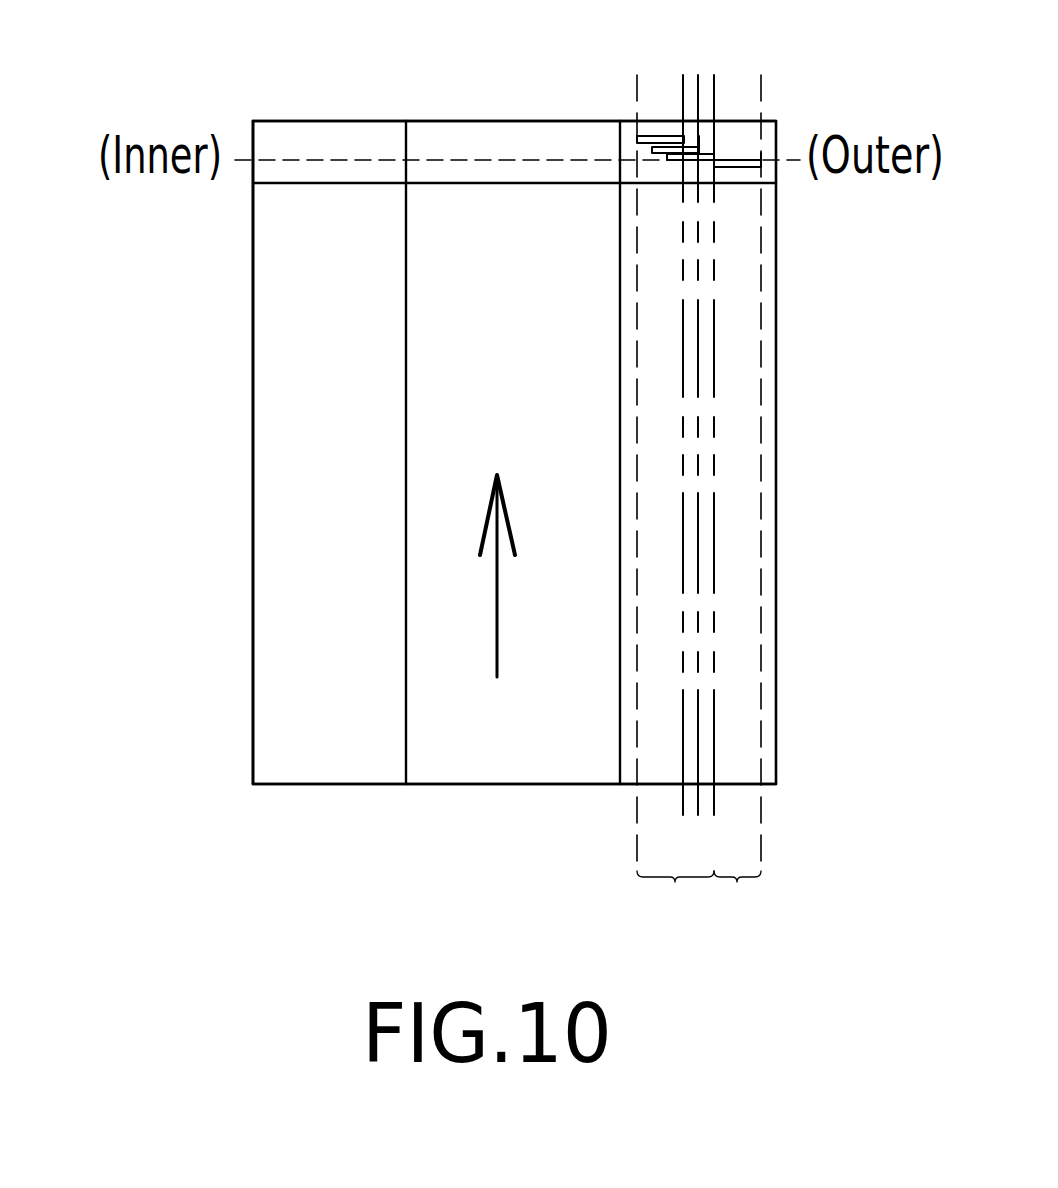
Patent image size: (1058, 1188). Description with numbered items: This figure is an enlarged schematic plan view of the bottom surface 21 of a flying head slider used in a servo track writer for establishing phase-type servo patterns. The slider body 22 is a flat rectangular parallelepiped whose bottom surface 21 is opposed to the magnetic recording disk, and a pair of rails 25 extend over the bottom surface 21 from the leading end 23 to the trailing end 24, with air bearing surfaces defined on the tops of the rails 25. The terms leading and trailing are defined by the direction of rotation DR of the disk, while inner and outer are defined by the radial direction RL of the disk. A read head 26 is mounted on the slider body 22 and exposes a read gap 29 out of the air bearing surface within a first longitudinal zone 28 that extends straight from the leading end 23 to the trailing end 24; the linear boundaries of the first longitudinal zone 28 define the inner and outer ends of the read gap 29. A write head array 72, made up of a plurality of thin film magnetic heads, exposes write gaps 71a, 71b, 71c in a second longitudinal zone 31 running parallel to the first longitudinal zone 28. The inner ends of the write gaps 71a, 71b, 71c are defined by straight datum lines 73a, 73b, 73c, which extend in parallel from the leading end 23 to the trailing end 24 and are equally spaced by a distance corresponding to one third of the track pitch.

The bottom surface 21 is at (297, 582).
The slider body 22 is at (252, 452).
The leading end 23 is at (283, 786).
The trailing end 24 is at (285, 120).
The rail 25 is at (407, 380).
The read head 26 is at (764, 153).
The first longitudinal zone 28 is at (741, 511).
The read gap 29 is at (731, 167).
The second longitudinal zone 31 is at (669, 511).
The write gap 71a is at (678, 156).
The write gap 71b is at (693, 138).
The write gap 71c is at (656, 137).
The write head array 72 is at (703, 141).
The straight datum line 73a is at (713, 318).
The straight datum line 73b is at (698, 350).
The straight datum line 73c is at (683, 390).
The radial direction RL is at (443, 158).
The direction of rotation DR is at (500, 640).